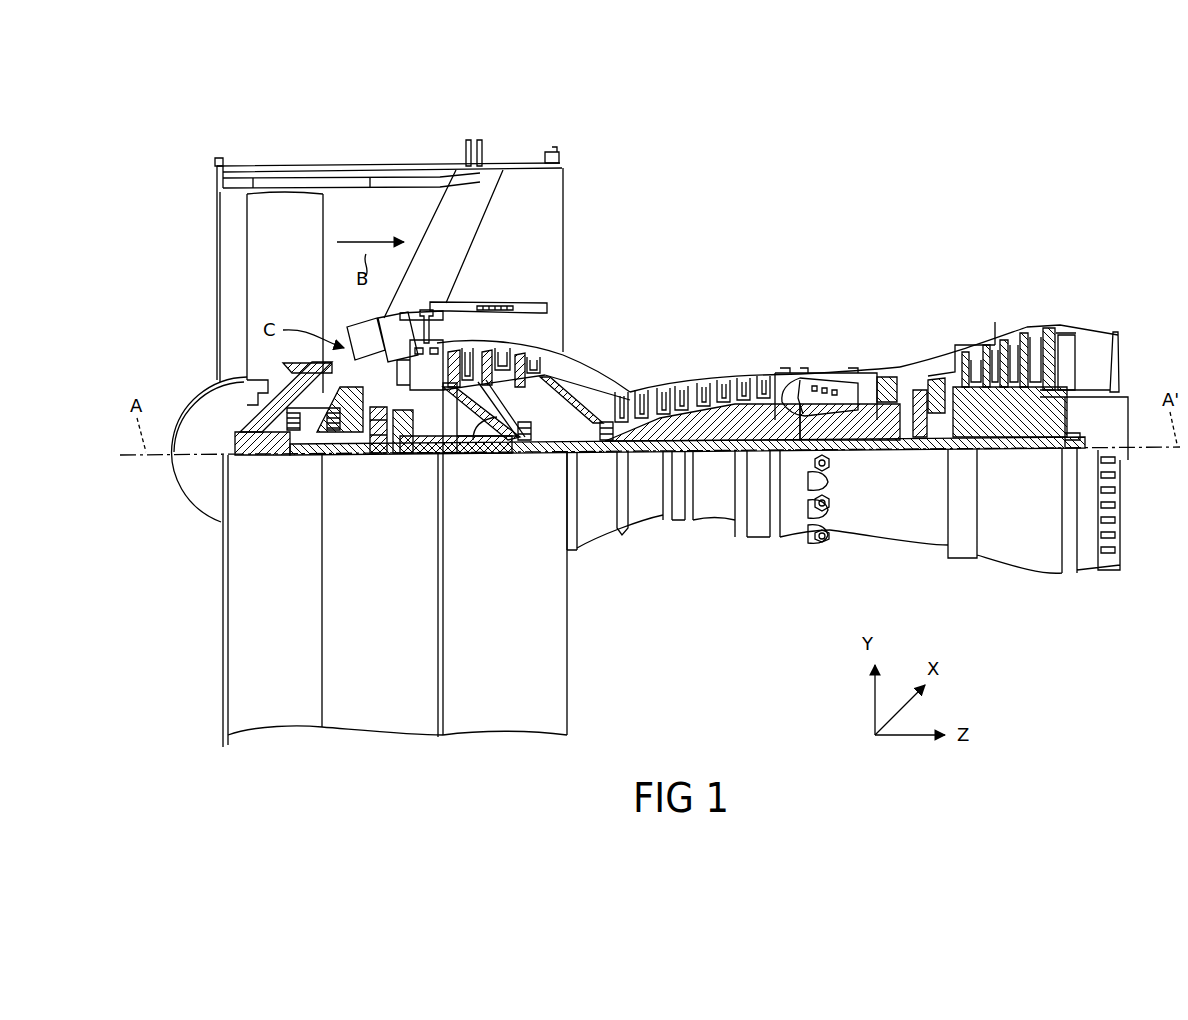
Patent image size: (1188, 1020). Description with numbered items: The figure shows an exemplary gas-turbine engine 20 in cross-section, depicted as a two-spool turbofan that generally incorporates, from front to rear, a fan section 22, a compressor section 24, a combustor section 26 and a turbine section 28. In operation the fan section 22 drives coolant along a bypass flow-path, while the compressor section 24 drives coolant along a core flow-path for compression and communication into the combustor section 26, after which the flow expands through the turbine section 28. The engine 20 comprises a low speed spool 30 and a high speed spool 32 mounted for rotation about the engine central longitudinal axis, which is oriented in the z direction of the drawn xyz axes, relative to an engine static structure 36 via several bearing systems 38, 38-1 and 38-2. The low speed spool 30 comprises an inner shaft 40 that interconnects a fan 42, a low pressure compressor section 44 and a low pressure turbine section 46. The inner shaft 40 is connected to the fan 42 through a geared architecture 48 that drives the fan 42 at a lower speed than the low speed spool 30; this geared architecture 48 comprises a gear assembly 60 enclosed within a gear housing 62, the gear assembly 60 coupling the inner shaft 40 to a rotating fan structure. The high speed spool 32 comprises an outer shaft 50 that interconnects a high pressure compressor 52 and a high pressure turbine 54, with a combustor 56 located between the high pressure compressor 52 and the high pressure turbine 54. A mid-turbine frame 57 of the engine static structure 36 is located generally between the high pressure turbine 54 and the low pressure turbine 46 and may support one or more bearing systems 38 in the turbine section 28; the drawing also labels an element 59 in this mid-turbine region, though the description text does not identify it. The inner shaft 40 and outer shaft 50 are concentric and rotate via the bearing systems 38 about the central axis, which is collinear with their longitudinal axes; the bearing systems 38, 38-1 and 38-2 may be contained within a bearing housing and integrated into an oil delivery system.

The gas-turbine engine 20 is at (866, 196).
The fan section 22 is at (428, 151).
The compressor section 24 is at (440, 266).
The combustor section 26 is at (870, 266).
The turbine section 28 is at (1065, 266).
The low speed spool 30 is at (720, 458).
The high speed spool 32 is at (756, 415).
The engine static structure 36 is at (376, 716).
The bearing system 38 is at (918, 446).
The bearing system 38-1 is at (293, 434).
The bearing system 38-2 is at (521, 455).
The inner shaft 40 is at (584, 456).
The fan 42 is at (285, 292).
The low pressure compressor section 44 is at (505, 355).
The low pressure turbine section 46 is at (1003, 345).
The geared architecture 48 is at (401, 465).
The outer shaft 50 is at (818, 441).
The high pressure compressor 52 is at (689, 415).
The high pressure turbine 54 is at (888, 375).
The combustor 56 is at (815, 395).
The mid-turbine frame 57 is at (925, 378).
The vane 59 is at (935, 400).
The gear assembly 60 is at (420, 437).
The gear housing 62 is at (398, 405).